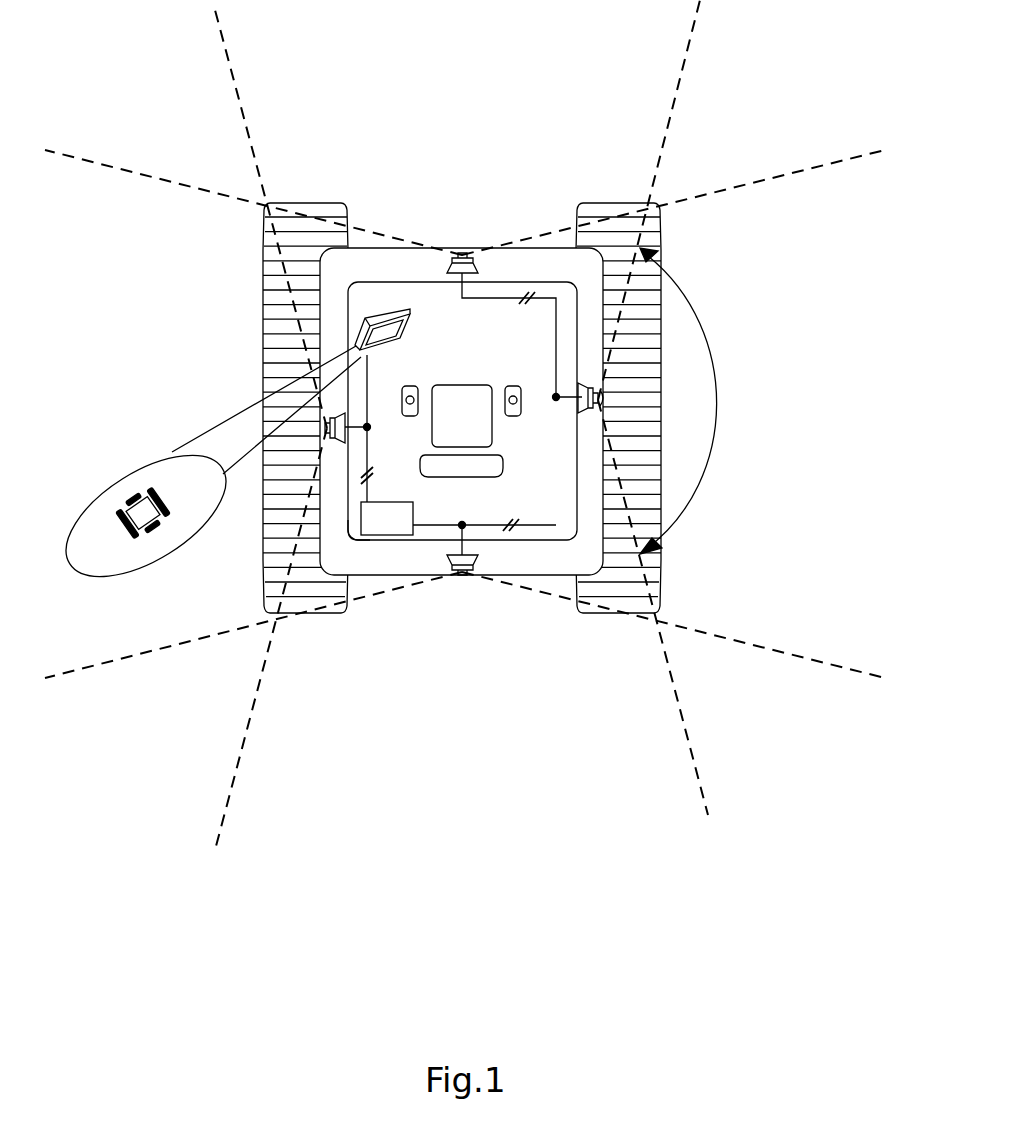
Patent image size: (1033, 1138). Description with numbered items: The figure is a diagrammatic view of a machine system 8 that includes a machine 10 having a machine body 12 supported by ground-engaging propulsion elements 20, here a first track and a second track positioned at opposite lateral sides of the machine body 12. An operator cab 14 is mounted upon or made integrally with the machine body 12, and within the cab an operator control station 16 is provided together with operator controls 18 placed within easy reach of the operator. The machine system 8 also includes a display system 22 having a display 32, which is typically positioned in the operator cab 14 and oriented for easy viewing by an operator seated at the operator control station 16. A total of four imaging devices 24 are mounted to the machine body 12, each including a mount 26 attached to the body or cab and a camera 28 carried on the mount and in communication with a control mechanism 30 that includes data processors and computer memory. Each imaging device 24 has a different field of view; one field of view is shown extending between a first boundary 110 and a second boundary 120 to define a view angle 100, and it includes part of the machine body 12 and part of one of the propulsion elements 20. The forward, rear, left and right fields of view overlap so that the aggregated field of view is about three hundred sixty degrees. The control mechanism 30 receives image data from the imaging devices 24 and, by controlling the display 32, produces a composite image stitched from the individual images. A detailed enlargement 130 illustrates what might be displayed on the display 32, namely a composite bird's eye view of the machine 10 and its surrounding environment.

The machine system 8 is at (465, 425).
The machine 10 is at (442, 408).
The machine body 12 is at (370, 256).
The operator cab 14 is at (416, 281).
The operator control station 16 is at (516, 448).
The operator controls 18 is at (412, 385).
The ground-engaging propulsion elements 20 is at (280, 330).
The display system 22 is at (368, 550).
The imaging devices 24 is at (485, 268).
The mount 26 is at (580, 390).
The camera 28 is at (592, 383).
The control mechanism 30 is at (396, 502).
The display 32 is at (412, 316).
The view angle 100 is at (716, 398).
The first boundary 110 is at (689, 36).
The second boundary 120 is at (688, 730).
The detailed enlargement 130 is at (120, 480).